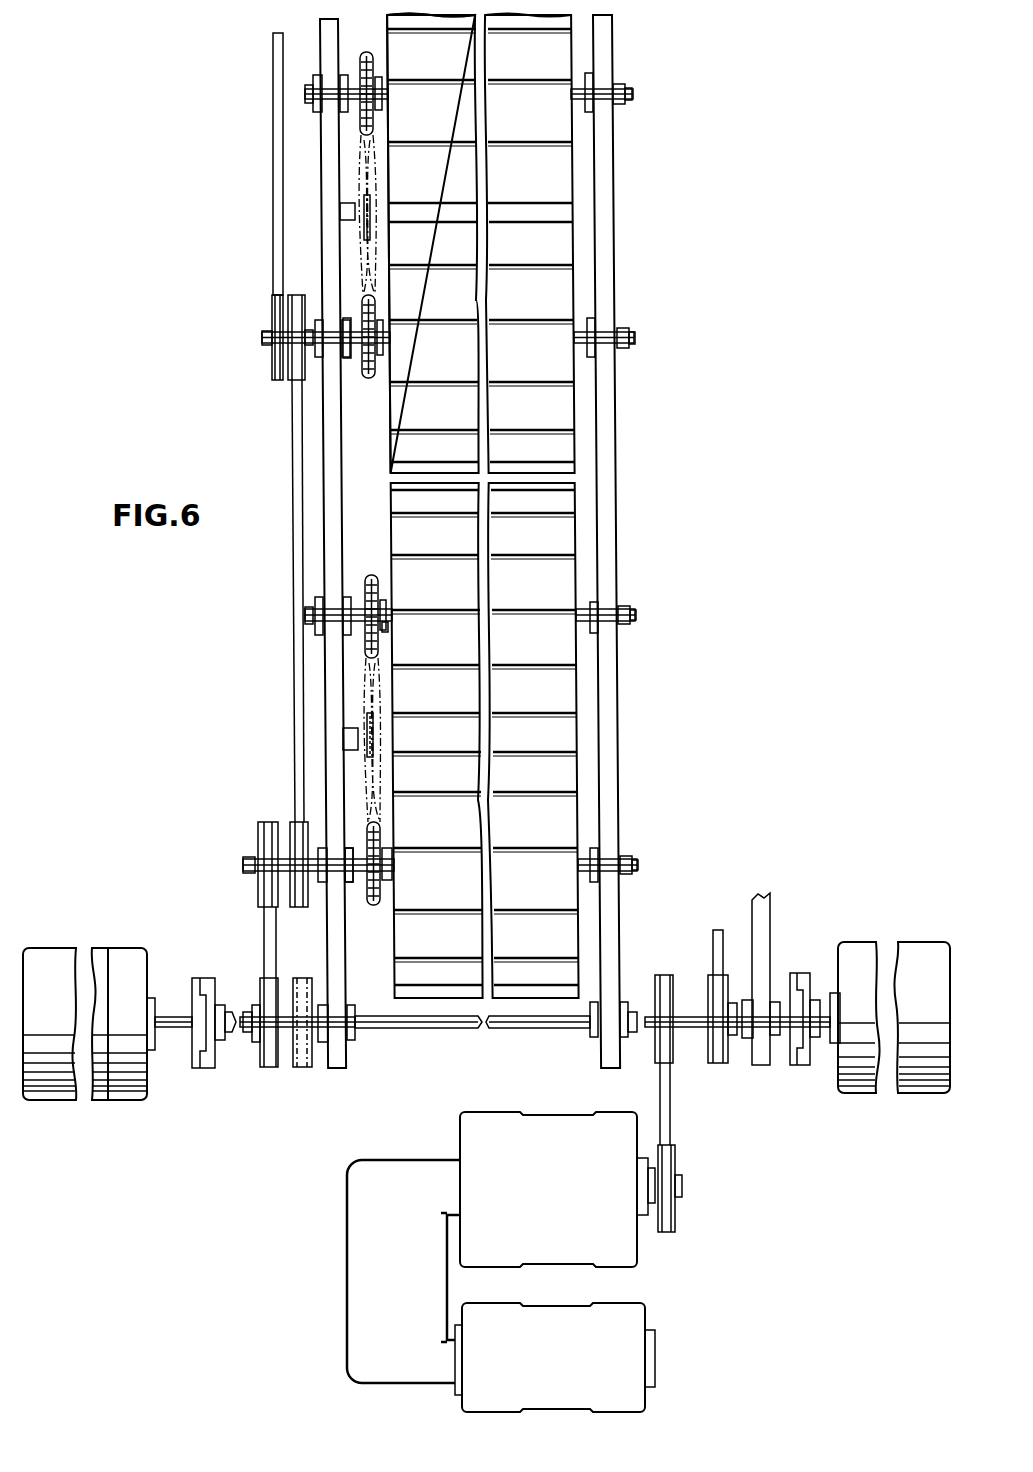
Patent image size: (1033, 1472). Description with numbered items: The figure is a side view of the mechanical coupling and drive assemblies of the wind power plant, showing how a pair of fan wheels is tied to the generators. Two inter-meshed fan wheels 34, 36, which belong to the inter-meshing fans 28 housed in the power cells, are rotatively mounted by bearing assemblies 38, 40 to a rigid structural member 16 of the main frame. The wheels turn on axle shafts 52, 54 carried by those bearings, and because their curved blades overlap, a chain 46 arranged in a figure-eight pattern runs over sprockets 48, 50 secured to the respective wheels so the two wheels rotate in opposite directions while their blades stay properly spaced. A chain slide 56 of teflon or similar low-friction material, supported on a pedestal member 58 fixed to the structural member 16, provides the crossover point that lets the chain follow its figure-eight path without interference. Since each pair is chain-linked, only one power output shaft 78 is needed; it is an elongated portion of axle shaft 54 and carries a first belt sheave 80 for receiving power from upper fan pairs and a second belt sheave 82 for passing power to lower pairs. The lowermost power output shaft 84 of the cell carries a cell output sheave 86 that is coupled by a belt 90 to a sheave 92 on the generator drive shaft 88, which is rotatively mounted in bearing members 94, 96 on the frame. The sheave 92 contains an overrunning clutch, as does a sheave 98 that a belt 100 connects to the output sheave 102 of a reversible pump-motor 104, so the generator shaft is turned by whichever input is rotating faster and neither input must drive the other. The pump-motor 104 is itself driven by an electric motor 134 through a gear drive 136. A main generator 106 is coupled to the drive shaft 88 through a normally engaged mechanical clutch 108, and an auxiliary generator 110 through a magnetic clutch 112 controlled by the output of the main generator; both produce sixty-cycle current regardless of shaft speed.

The rigid structural member 16 is at (341, 32).
The inter-meshing fan 28 is at (585, 218).
The fan wheel 34 is at (538, 124).
The fan wheel 36 is at (537, 361).
The bearing assembly 38 is at (343, 74).
The bearing assembly 40 is at (343, 321).
The chain 46 is at (374, 182).
The sprocket 48 is at (373, 125).
The sprocket 50 is at (376, 363).
The axle shaft 52 is at (383, 86).
The axle shaft 54 is at (383, 327).
The chain slide 56 is at (370, 210).
The pedestal member 58 is at (342, 213).
The power output shaft 78 is at (348, 358).
The first belt sheave 80 is at (272, 316).
The second belt sheave 82 is at (305, 380).
The lowermost power output shaft 84 is at (323, 858).
The cell output sheave 86 is at (258, 836).
The generator drive shaft 88 is at (430, 1029).
The belt 90 is at (264, 950).
The sheave 92 is at (310, 975).
The bearing member 94 is at (355, 1041).
The bearing member 96 is at (771, 997).
The sheave 98 is at (656, 985).
The belt 100 is at (671, 1108).
The output sheave 102 is at (677, 1213).
The reversible pump-motor 104 is at (560, 1228).
The main generator 106 is at (121, 948).
The mechanical clutch 108 is at (200, 978).
The auxiliary generator 110 is at (867, 945).
The magnetic clutch 112 is at (803, 974).
The electric motor 134 is at (560, 1381).
The gear drive 136 is at (408, 1268).